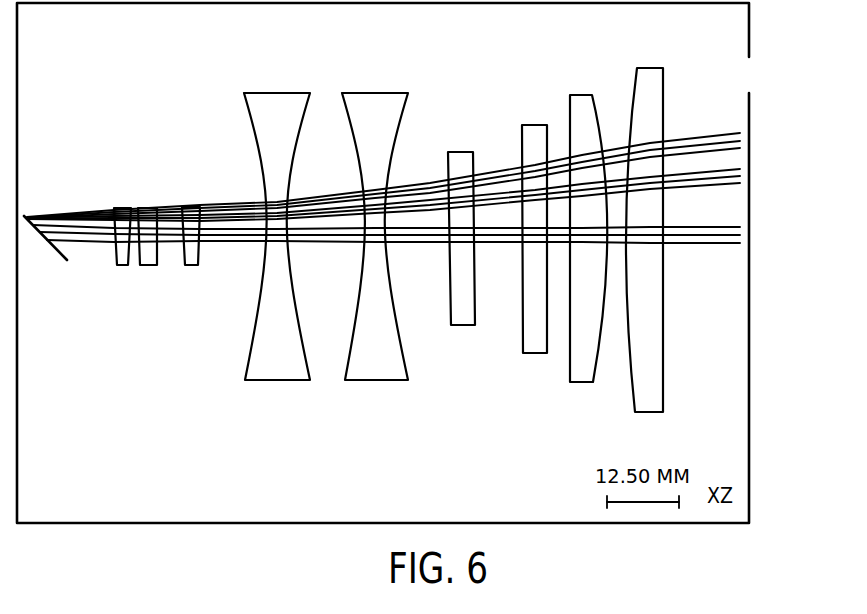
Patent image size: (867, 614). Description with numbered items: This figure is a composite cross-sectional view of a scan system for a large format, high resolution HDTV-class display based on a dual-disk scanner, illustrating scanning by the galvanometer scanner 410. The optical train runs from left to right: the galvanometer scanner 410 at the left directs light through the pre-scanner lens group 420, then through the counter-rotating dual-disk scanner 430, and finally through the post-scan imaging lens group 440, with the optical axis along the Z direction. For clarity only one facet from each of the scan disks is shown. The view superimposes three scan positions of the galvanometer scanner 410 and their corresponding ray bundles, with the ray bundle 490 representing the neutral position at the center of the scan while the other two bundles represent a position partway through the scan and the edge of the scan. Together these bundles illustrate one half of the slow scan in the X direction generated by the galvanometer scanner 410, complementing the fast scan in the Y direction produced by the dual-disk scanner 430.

The galvanometer scanner 410 is at (61, 254).
The pre-scanner lens group 420 is at (217, 268).
The counter-rotating dual-disk scanner 430 is at (415, 388).
The post-scan imaging lens group 440 is at (672, 422).
The ray bundle 490 is at (724, 247).